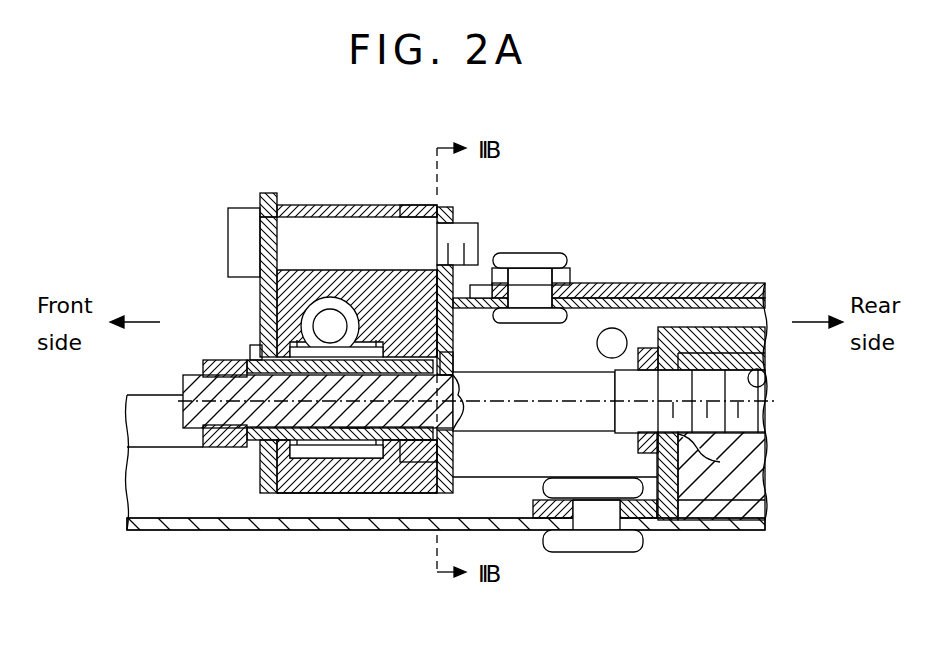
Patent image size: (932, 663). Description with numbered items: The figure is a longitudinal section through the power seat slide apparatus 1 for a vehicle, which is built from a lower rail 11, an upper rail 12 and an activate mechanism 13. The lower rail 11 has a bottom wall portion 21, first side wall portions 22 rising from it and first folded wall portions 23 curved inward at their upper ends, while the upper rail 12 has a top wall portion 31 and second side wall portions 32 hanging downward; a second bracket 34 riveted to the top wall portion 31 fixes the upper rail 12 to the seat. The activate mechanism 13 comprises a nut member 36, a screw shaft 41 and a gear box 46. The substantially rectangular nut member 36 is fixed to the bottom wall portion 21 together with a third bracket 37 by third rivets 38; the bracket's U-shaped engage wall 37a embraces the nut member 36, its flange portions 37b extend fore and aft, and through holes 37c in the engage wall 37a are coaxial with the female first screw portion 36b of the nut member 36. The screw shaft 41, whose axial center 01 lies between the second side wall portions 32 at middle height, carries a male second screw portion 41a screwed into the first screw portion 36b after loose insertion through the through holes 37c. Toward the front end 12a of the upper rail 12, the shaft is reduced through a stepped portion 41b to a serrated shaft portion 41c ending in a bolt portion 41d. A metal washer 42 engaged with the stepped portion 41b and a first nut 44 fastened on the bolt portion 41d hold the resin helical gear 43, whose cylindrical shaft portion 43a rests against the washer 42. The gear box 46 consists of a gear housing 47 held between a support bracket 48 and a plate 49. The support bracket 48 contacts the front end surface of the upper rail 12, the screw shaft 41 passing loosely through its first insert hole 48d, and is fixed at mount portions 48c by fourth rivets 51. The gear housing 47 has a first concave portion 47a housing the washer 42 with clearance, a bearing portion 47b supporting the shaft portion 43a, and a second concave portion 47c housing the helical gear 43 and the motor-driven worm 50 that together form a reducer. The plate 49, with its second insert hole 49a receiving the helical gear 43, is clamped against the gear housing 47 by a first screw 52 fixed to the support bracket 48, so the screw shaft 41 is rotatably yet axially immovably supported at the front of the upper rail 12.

The power seat slide apparatus 1 is at (646, 180).
The lower rail 11 is at (198, 533).
The upper rail 12 is at (665, 283).
The front end 12a is at (455, 297).
The activate mechanism 13 is at (190, 248).
The bottom wall portion 21 is at (280, 531).
The first side wall portion 22 is at (127, 484).
The first folded wall portion 23 is at (127, 421).
The top wall portion 31 is at (605, 296).
The second side wall portion 32 is at (510, 477).
The second bracket 34 is at (645, 293).
The nut member 36 is at (703, 513).
The first screw portion 36b is at (766, 382).
The third bracket 37 is at (702, 337).
The engage wall 37a is at (670, 347).
The flange portion 37b is at (650, 513).
The through hole 37c is at (687, 463).
The third rivet 38 is at (597, 522).
The screw shaft 41 is at (590, 351).
The second screw portion 41a is at (758, 449).
The stepped portion 41b is at (425, 347).
The serrated shaft portion 41c is at (353, 482).
The bolt portion 41d is at (212, 448).
The washer 42 is at (402, 482).
The helical gear 43 is at (313, 494).
The shaft portion 43a is at (372, 300).
The first nut 44 is at (203, 365).
The gear box 46 is at (322, 205).
The gear housing 47 is at (348, 208).
The first concave portion 47a is at (457, 433).
The bearing portion 47b is at (393, 493).
The second concave portion 47c is at (260, 491).
The support bracket 48 is at (447, 207).
The mount portion 48c is at (570, 285).
The first insert hole 48d is at (460, 370).
The plate 49 is at (266, 193).
The second insert hole 49a is at (252, 349).
The worm 50 is at (321, 296).
The fourth rivet 51 is at (533, 277).
The first screw 52 is at (401, 209).
The axial center 01 is at (497, 400).